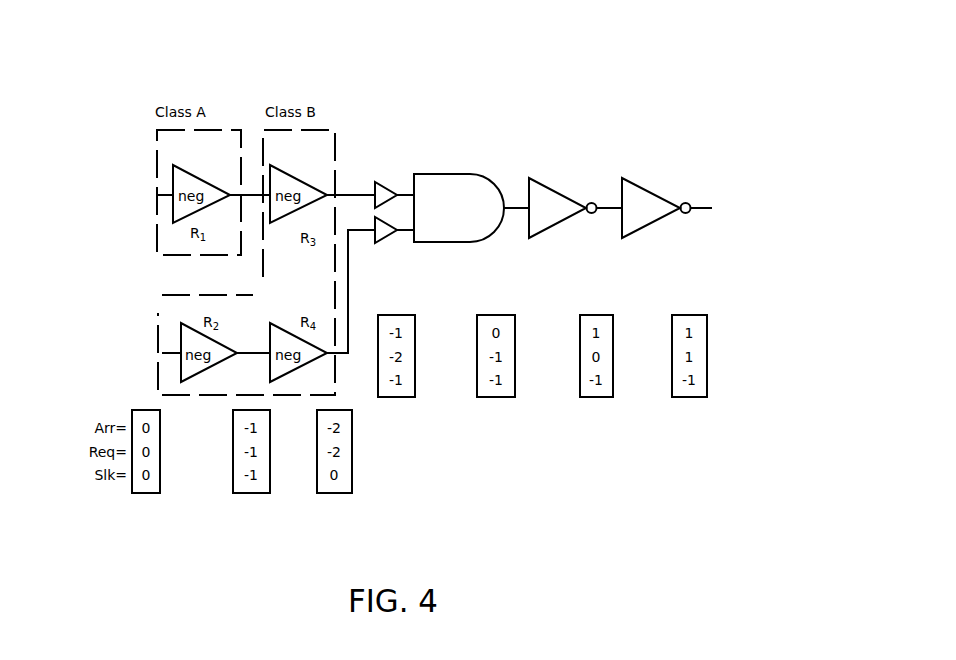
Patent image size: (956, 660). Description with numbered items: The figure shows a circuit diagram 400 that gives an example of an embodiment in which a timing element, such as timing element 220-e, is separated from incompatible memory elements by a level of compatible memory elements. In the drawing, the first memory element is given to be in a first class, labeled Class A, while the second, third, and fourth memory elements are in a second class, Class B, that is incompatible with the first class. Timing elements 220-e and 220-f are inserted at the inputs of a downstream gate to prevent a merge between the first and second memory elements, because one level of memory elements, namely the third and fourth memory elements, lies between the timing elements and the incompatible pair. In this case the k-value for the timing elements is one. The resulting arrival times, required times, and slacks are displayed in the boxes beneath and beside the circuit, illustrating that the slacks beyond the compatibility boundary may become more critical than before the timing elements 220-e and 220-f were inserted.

The circuit diagram 400 is at (198, 52).
The timing element 220-e is at (384, 184).
The timing element 220-f is at (384, 242).